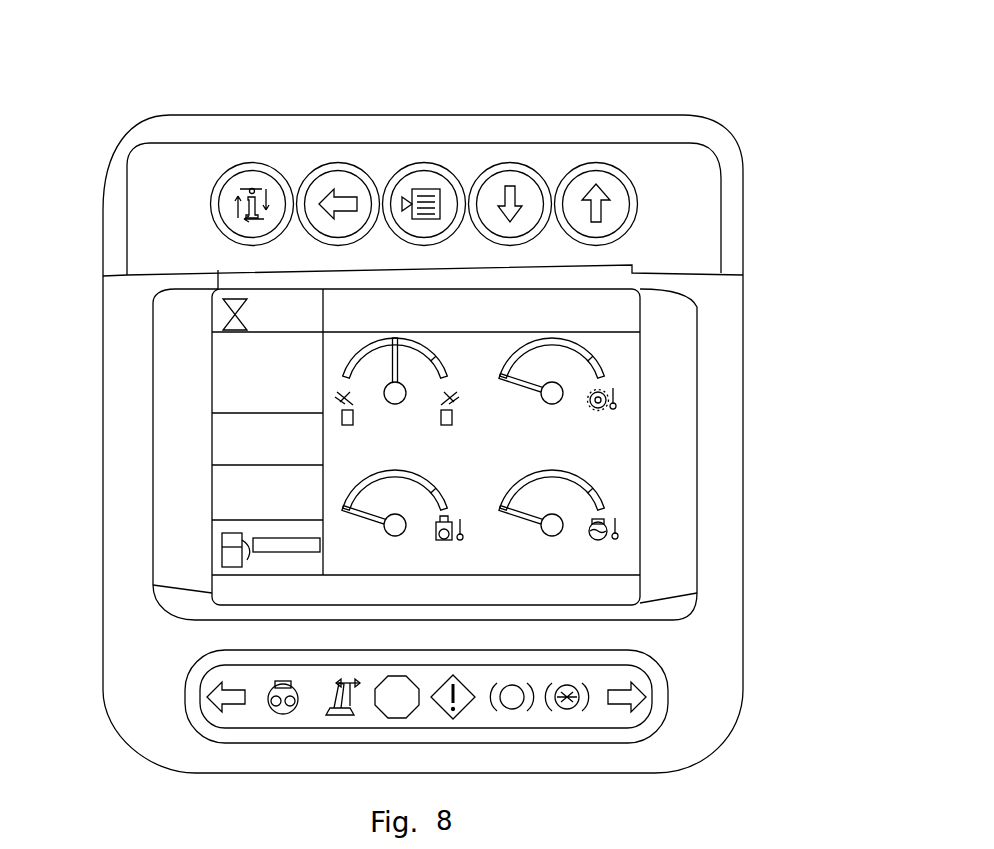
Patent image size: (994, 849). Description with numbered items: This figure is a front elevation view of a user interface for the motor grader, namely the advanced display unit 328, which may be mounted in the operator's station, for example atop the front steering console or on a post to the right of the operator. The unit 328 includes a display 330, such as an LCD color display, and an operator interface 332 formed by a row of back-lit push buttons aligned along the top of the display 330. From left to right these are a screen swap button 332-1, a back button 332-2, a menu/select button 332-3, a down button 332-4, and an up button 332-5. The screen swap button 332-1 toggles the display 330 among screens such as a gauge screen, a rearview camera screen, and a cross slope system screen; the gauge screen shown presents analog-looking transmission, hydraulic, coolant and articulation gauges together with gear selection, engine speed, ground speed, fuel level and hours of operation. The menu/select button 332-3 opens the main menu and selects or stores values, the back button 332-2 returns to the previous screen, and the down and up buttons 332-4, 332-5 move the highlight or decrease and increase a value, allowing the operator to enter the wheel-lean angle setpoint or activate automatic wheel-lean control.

The advanced display unit 328 is at (71, 123).
The display 330 is at (625, 434).
The operator interface 332 is at (547, 128).
The screen swap button 332-1 is at (257, 175).
The back button 332-2 is at (340, 173).
The menu/select button 332-3 is at (421, 171).
The down button 332-4 is at (505, 175).
The up button 332-5 is at (605, 175).